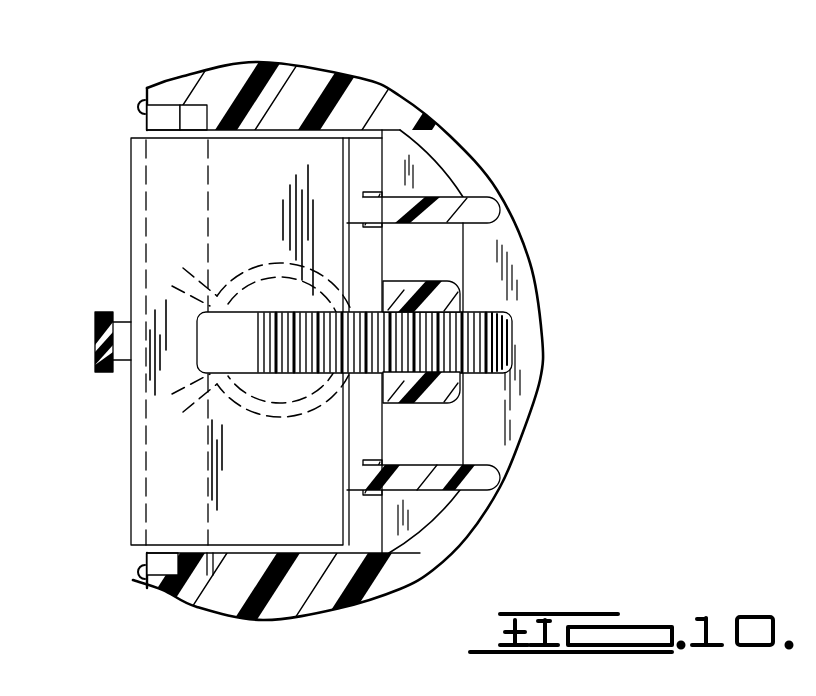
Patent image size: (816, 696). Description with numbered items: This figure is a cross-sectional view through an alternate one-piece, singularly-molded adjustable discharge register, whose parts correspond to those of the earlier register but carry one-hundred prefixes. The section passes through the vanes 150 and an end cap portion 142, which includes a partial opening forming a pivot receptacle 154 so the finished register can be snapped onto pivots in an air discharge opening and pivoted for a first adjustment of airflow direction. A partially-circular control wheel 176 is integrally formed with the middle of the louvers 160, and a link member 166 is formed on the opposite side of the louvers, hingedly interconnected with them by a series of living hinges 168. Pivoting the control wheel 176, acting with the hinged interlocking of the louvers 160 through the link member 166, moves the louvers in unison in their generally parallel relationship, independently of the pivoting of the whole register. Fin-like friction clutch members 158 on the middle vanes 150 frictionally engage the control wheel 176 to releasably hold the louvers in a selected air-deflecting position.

The vanes 150 is at (372, 103).
The end cap portion 142 is at (507, 240).
The louvers 160 is at (163, 218).
The pivot receptacle 154 is at (256, 410).
The control wheel 176 is at (513, 333).
The friction clutch member 158 is at (400, 281).
The link member 166 is at (95, 340).
The living hinges 168 is at (116, 364).